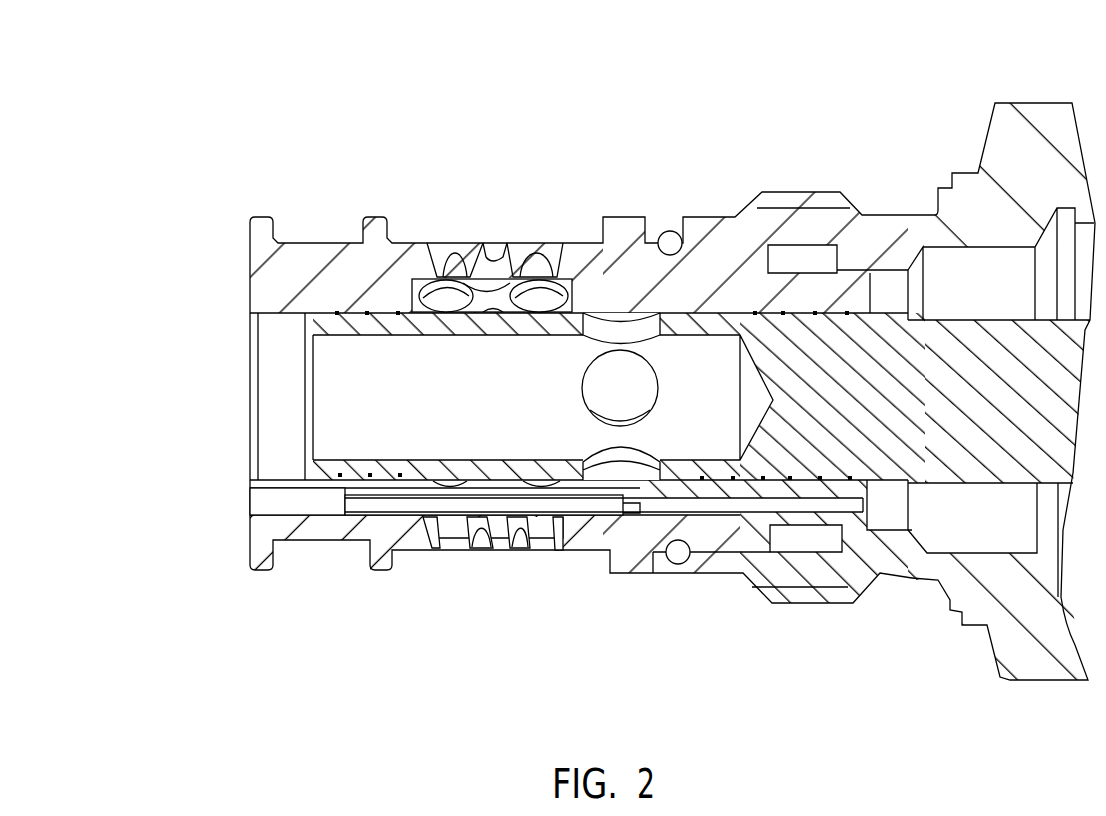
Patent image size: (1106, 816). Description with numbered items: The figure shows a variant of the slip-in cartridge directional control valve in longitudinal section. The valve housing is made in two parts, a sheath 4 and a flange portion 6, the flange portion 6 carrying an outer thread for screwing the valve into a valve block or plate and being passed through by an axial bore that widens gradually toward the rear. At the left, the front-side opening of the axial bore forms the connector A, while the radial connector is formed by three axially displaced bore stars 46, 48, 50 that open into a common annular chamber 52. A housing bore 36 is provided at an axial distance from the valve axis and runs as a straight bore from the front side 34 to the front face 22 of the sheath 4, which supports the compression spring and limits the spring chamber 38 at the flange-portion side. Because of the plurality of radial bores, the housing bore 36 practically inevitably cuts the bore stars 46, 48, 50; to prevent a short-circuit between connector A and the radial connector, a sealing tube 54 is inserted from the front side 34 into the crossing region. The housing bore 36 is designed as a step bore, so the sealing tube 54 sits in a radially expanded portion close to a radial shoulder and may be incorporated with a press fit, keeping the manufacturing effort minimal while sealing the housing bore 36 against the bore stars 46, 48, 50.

The front side 34 is at (248, 243).
The sheath 4 is at (620, 225).
The connector A is at (282, 385).
The housing bore 36 is at (316, 517).
The sealing tube 54 is at (426, 502).
The common annular chamber 52 is at (425, 272).
The bore star 46 is at (447, 275).
The bore star 48 is at (495, 253).
The bore star 50 is at (540, 275).
The flange portion 6 is at (790, 215).
The front face 22 is at (870, 285).
The spring chamber 38 is at (973, 272).